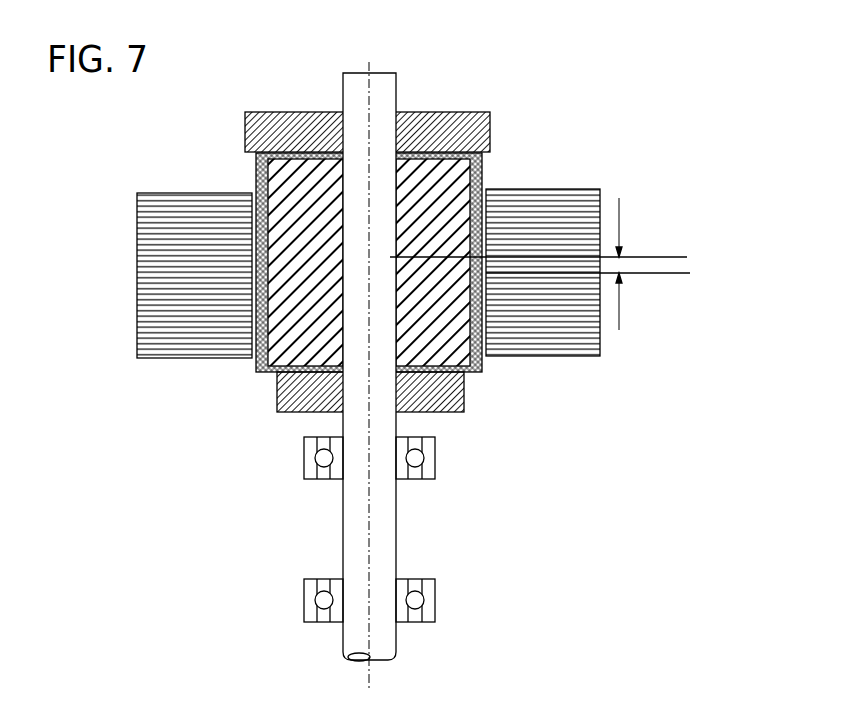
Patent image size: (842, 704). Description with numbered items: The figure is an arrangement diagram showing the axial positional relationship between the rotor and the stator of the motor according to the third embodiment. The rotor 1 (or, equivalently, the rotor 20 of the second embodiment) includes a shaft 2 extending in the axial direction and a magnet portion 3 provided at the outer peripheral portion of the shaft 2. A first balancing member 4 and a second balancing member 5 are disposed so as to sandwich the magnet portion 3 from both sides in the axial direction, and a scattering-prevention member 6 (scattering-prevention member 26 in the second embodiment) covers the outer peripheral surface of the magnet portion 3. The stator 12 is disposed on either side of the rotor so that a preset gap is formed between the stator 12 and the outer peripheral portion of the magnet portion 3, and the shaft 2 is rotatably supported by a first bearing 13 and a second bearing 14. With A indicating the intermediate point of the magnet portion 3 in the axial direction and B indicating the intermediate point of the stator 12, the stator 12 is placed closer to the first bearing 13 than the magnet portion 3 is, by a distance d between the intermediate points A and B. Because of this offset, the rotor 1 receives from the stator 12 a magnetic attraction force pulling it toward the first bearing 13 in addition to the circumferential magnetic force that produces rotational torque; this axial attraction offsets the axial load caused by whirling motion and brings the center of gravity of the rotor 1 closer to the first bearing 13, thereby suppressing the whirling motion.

The rotor 1 is at (448, 350).
The rotor 20 is at (305, 65).
The shaft 2 is at (386, 92).
The magnet portion 3 is at (275, 384).
The first balancing member 4 is at (478, 120).
The second balancing member 5 is at (447, 410).
The scattering-prevention member 6 is at (313, 239).
The scattering-prevention member 26 is at (257, 172).
The stator 12 is at (543, 192).
The first bearing 13 is at (427, 467).
The second bearing 14 is at (437, 620).
The intermediate point of the magnet portion A is at (668, 256).
The intermediate point of the stator B is at (670, 273).
The distance d is at (625, 265).